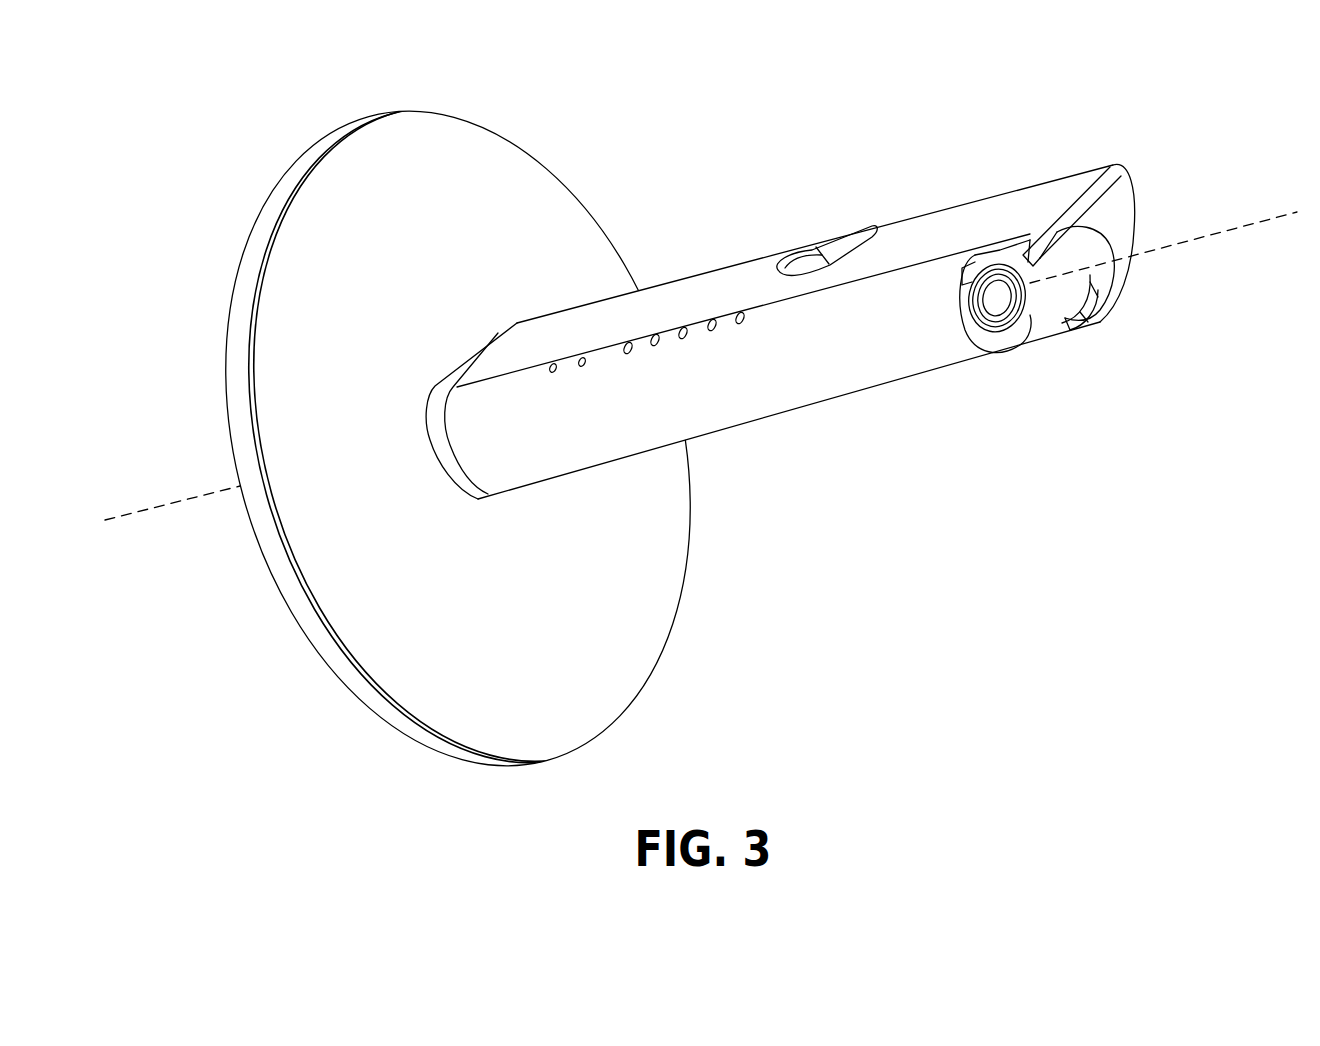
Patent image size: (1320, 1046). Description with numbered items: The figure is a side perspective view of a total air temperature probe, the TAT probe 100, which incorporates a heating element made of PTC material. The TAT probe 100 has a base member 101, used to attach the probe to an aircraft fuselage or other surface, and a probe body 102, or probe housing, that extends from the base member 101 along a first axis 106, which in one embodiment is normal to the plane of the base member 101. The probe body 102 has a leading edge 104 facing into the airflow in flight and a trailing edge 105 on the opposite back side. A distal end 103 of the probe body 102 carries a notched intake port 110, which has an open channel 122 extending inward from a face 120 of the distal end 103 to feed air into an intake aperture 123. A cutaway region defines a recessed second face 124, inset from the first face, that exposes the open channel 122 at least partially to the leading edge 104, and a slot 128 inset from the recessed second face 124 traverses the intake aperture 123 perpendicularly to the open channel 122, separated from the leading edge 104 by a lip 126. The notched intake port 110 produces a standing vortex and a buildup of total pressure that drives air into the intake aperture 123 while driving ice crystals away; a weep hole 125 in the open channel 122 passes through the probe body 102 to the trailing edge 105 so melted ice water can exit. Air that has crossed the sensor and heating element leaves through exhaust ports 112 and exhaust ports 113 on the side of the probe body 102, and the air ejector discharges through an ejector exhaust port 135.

The TAT probe 100 is at (170, 187).
The base member 101 is at (503, 137).
The probe body 102 is at (690, 280).
The distal end 103 is at (1109, 141).
The leading edge 104 is at (870, 383).
The trailing edge 105 is at (938, 212).
The first axis 106 is at (157, 508).
The notched intake port 110 is at (1137, 307).
The exhaust ports 112 is at (587, 370).
The exhaust ports 113 is at (763, 318).
The face 120 is at (1089, 221).
The open channel 122 is at (1115, 312).
The intake aperture 123 is at (1075, 290).
The recessed second face 124 is at (1047, 368).
The weep hole 125 is at (1022, 225).
The lip 126 is at (978, 338).
The slot 128 is at (965, 278).
The ejector exhaust port 135 is at (820, 250).